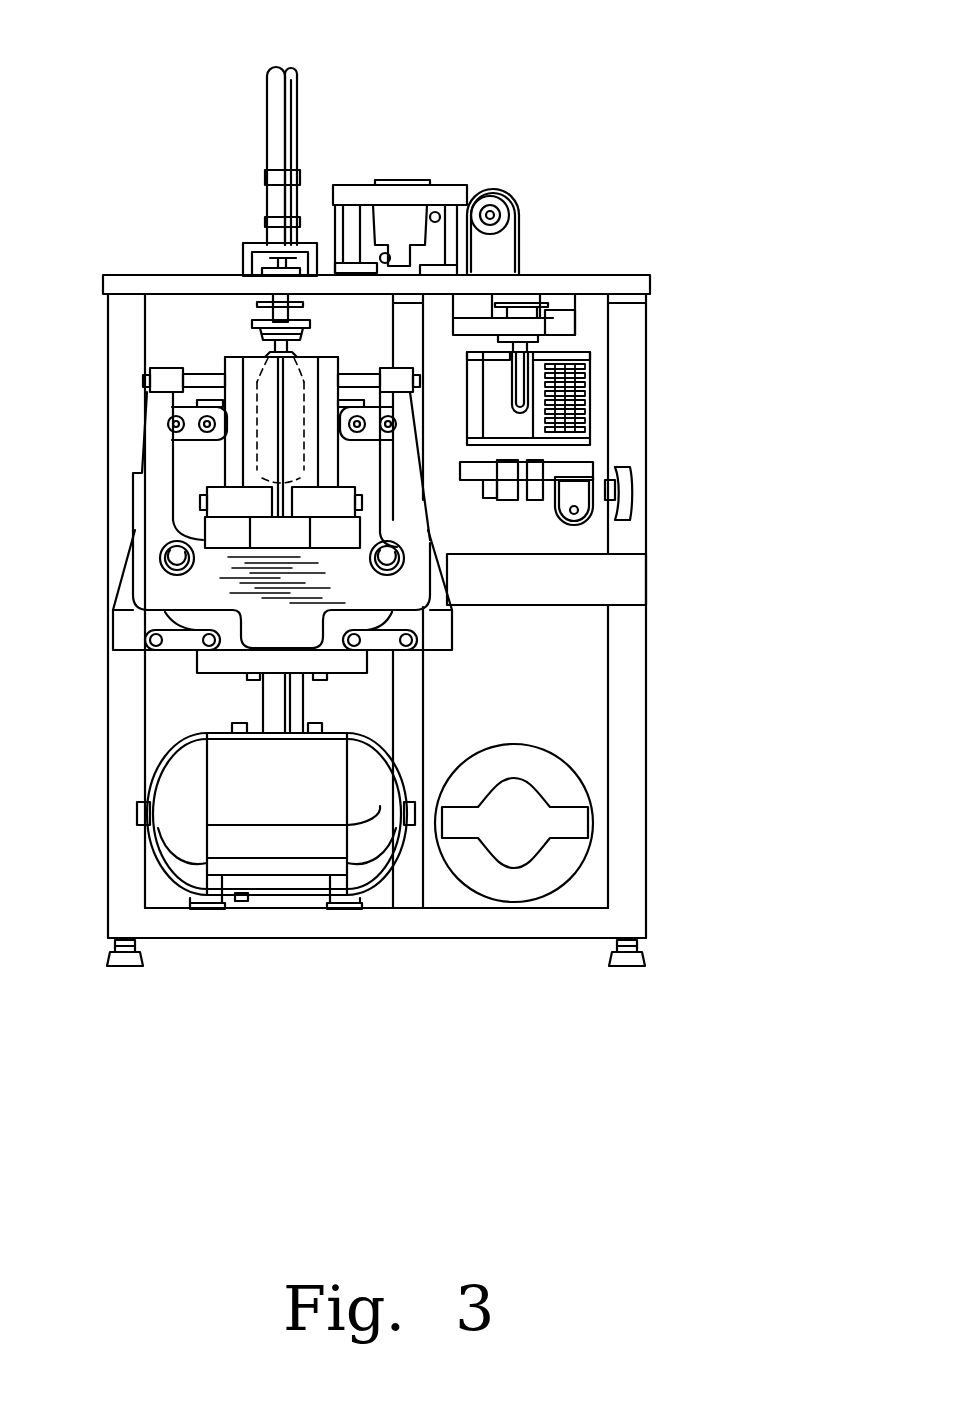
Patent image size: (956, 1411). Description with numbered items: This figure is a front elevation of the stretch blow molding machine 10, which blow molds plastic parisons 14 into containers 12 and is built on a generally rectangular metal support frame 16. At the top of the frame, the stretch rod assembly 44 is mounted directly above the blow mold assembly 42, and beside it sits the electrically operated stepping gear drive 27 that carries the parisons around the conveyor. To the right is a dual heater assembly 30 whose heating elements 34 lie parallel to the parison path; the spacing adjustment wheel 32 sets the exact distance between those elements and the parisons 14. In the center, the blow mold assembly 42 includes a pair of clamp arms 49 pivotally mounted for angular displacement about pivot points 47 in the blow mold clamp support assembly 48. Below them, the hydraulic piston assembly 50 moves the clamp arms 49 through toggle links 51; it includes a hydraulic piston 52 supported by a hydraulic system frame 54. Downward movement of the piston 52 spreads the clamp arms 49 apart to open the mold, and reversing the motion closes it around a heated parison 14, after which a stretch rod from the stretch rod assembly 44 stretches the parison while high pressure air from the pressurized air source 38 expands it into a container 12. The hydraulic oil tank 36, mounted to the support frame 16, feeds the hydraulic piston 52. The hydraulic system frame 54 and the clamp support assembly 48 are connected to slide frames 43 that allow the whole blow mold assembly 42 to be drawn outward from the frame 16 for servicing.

The stretch blow molding machine 10 is at (676, 58).
The container 12 is at (272, 467).
The parison 14 is at (518, 378).
The support frame 16 is at (121, 372).
The stepping gear drive 27 is at (505, 248).
The dual heater assembly 30 is at (608, 399).
The spacing adjustment wheel 32 is at (626, 528).
The heating elements 34 is at (545, 428).
The hydraulic oil tank 36 is at (527, 836).
The pressurized air source 38 is at (282, 798).
The blow mold assembly 42 is at (211, 341).
The slide frame 43 is at (522, 590).
The stretch rod assembly 44 is at (203, 183).
The pivot point 47 is at (178, 556).
The blow mold clamp support assembly 48 is at (152, 494).
The clamp arm 49 is at (178, 455).
The hydraulic piston assembly 50 is at (170, 662).
The toggle link 51 is at (380, 640).
The hydraulic piston 52 is at (272, 722).
The hydraulic system frame 54 is at (206, 692).